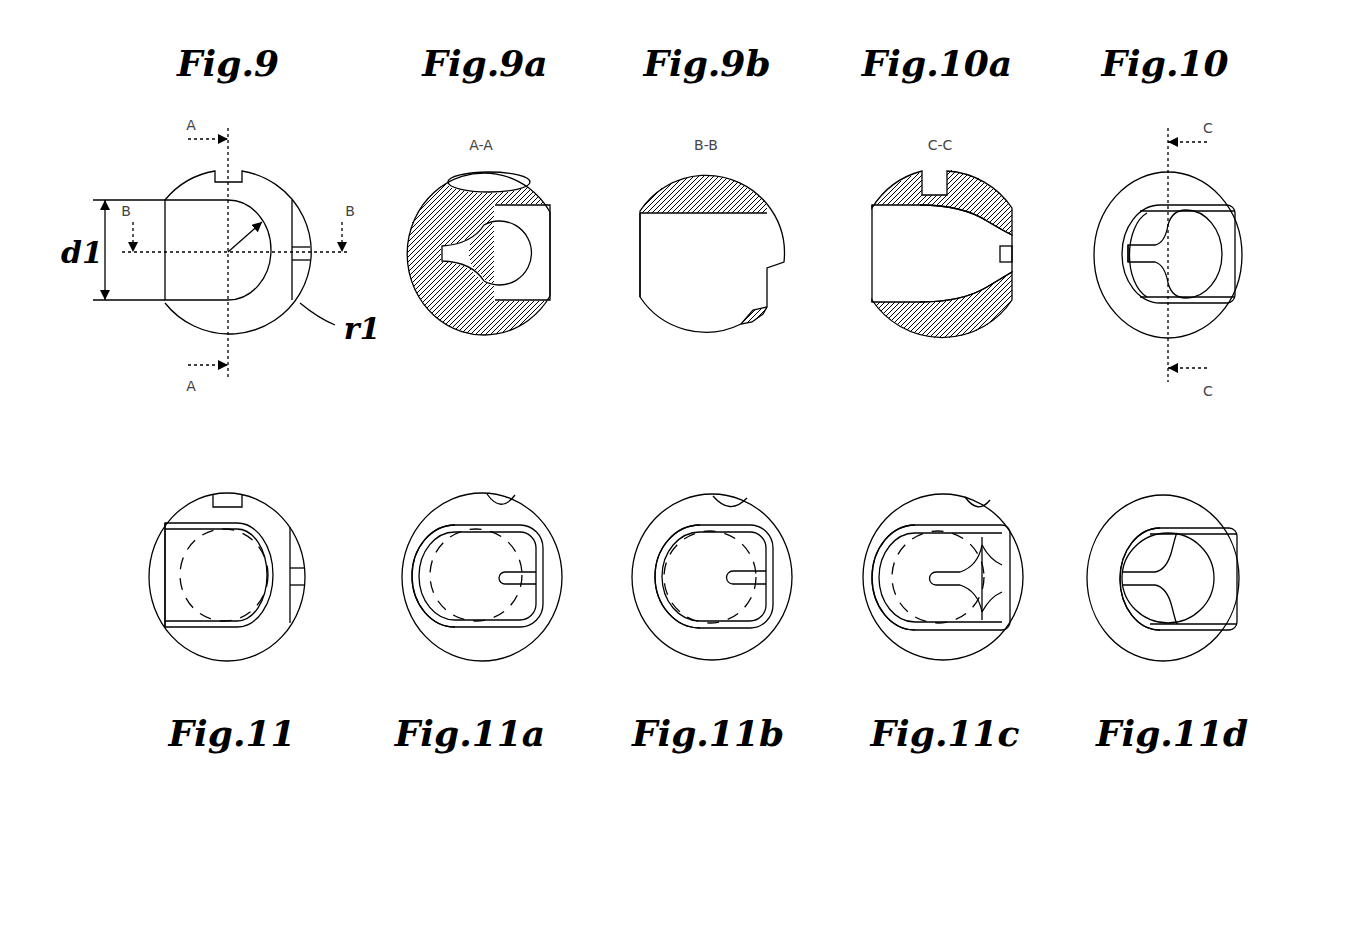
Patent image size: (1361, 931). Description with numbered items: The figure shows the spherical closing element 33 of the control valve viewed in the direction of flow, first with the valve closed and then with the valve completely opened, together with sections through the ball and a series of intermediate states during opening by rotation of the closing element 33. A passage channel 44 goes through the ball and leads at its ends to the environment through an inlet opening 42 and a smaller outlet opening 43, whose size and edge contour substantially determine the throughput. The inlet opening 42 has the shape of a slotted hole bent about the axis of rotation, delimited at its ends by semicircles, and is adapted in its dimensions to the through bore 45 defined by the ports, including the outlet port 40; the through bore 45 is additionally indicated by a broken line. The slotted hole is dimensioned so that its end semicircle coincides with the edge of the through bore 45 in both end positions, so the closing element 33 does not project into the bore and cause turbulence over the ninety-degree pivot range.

In FIG. 9, the closing element 33 is at (273, 300).
In FIG. 9A, the closing element 33 is at (535, 316).
In FIG. 9B, the closing element 33 is at (757, 322).
In FIG. 10A, the closing element 33 is at (985, 308).
In FIG. 10, the closing element 33 is at (1220, 315).
In FIG. 11, the closing element 33 is at (262, 500).
In FIG. 11A, the closing element 33 is at (520, 506).
In FIG. 11B, the closing element 33 is at (752, 518).
In FIG. 11C, the closing element 33 is at (973, 510).
In FIG. 11D, the closing element 33 is at (1207, 517).
In FIG. 11, the outlet port 40 is at (210, 591).
In FIG. 11A, the outlet port 40 is at (450, 591).
In FIG. 11B, the outlet port 40 is at (685, 593).
In FIG. 11C, the outlet port 40 is at (938, 577).
In FIG. 9, the inlet opening 42 is at (184, 264).
In FIG. 9A, the inlet opening 42 is at (540, 276).
In FIG. 10, the inlet opening 42 is at (1225, 275).
In FIG. 11, the inlet opening 42 is at (170, 612).
In FIG. 11A, the inlet opening 42 is at (410, 582).
In FIG. 11B, the inlet opening 42 is at (655, 548).
In FIG. 11C, the inlet opening 42 is at (882, 574).
In FIG. 11D, the inlet opening 42 is at (1220, 600).
In FIG. 9A, the outlet opening 43 is at (507, 256).
In FIG. 10, the outlet opening 43 is at (1205, 258).
In FIG. 11A, the outlet opening 43 is at (545, 598).
In FIG. 11B, the outlet opening 43 is at (625, 640).
In FIG. 11C, the outlet opening 43 is at (990, 565).
In FIG. 11D, the outlet opening 43 is at (1197, 578).
In FIG. 9B, the passage channel 44 is at (690, 269).
In FIG. 10A, the passage channel 44 is at (902, 269).
In FIG. 11C, the passage channel 44 is at (890, 614).
In FIG. 11D, the passage channel 44 is at (1123, 600).
In FIG. 11, the through bore 45 is at (163, 540).
In FIG. 11A, the through bore 45 is at (408, 542).
In FIG. 11B, the through bore 45 is at (676, 546).
In FIG. 11C, the through bore 45 is at (897, 533).